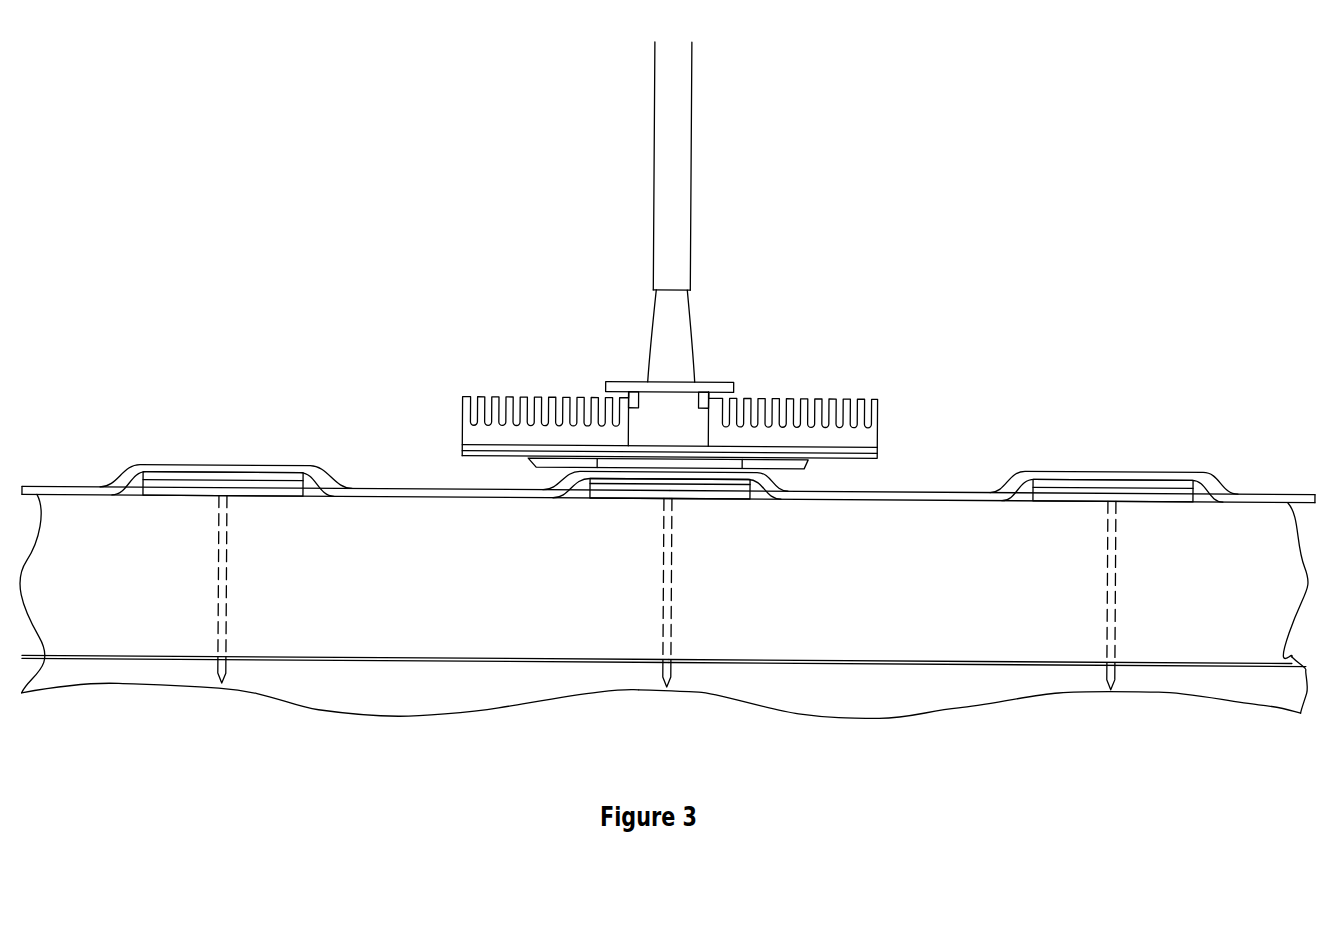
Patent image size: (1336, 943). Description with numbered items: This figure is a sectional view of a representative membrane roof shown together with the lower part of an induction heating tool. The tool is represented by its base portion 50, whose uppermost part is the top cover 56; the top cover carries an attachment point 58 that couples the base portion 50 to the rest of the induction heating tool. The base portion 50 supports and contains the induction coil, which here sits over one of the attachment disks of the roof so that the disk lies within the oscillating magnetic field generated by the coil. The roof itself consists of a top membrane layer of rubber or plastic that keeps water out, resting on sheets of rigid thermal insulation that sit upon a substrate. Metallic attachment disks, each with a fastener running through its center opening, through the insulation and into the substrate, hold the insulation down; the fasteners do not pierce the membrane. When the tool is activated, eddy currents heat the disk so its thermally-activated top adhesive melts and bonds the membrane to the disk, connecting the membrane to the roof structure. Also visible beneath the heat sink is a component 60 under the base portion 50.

The base portion 50 is at (851, 378).
The top cover 56 is at (508, 398).
The attachment point 58 is at (677, 342).
The thermal interface plate 60 is at (808, 467).